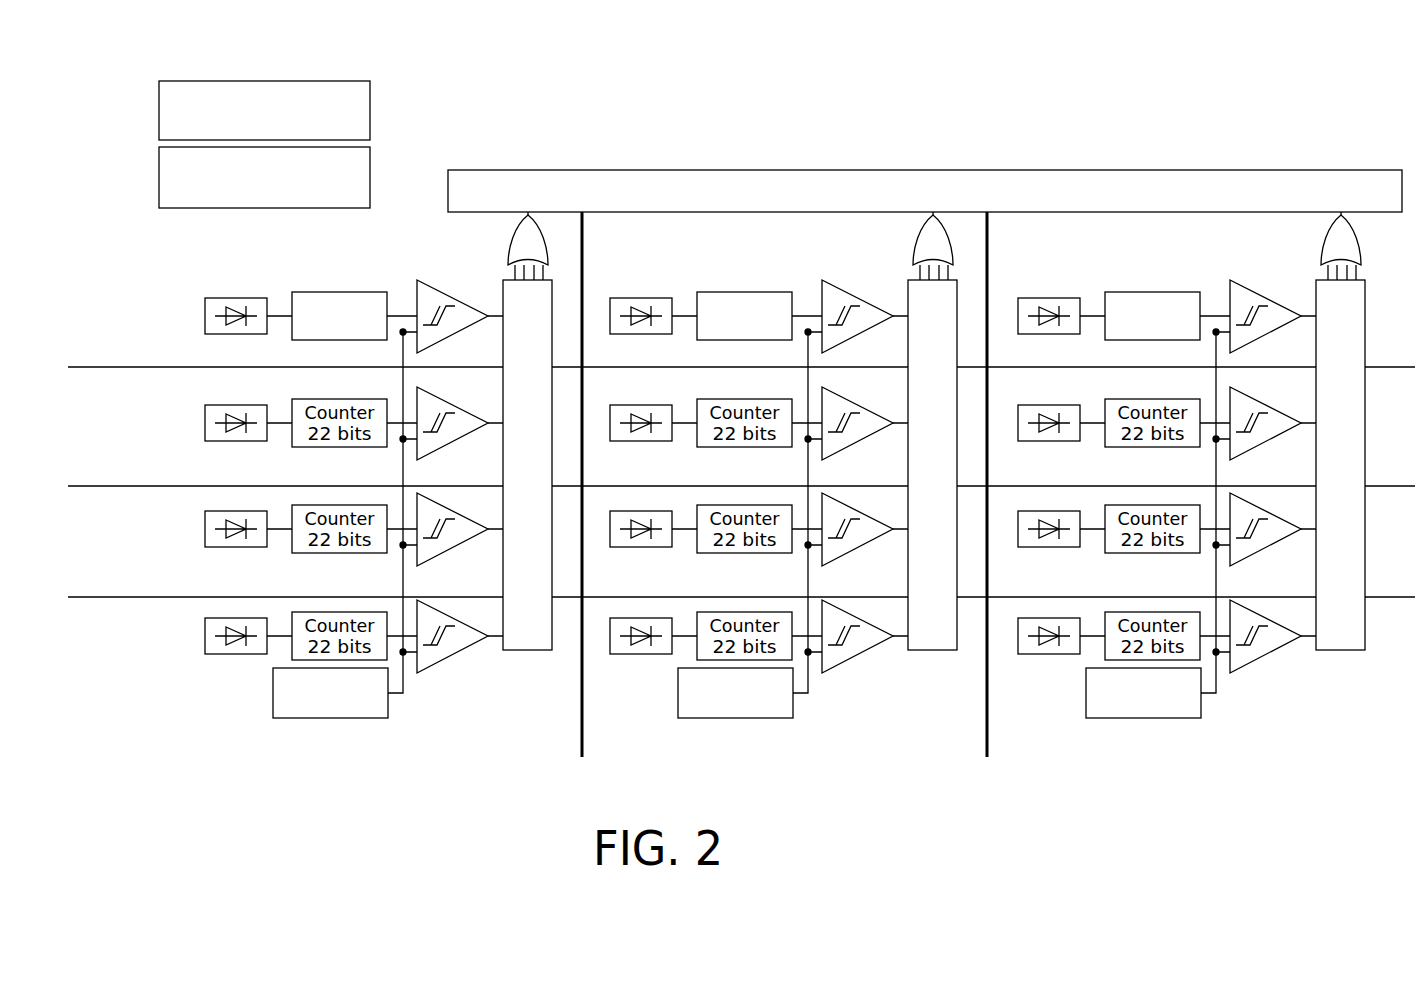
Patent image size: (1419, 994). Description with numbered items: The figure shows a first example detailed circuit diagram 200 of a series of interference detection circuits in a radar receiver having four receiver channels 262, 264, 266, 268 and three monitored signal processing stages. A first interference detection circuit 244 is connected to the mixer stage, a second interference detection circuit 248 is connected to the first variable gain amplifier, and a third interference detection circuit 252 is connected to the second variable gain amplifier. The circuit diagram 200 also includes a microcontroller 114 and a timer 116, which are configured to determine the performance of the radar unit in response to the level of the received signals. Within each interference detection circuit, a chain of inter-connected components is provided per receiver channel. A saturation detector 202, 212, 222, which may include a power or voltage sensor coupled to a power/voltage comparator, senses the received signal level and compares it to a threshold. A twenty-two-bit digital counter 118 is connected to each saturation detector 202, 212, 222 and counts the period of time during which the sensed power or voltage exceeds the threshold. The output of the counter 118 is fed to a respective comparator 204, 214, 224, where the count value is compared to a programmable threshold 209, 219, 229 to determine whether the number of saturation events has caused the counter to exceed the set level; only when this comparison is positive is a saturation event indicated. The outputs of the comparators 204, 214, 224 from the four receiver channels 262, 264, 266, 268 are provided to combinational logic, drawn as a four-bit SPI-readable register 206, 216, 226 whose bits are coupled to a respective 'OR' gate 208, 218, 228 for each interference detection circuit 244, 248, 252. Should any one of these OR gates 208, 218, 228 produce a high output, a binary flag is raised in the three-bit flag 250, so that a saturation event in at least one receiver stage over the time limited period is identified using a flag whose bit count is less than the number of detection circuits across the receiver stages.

The microcontroller 114 is at (200, 81).
The timer 116 is at (158, 194).
The 22-bit digital counter 118 is at (357, 292).
The detailed circuit diagram 200 is at (494, 66).
The saturation detector 202 is at (205, 298).
The comparator 204 is at (445, 293).
The mixer 4-bit SPI readable register 206 is at (503, 292).
The 'OR' gate 208 is at (543, 228).
The programmable threshold 209 is at (273, 707).
The saturation detector 212 is at (638, 272).
The comparator 214 is at (850, 293).
The VGA1 4-bit SPI readable register 216 is at (908, 291).
The 'OR' gate 218 is at (948, 228).
The programmable threshold 219 is at (678, 707).
The saturation detector 222 is at (1043, 272).
The comparator 224 is at (1258, 293).
The VGA2 4-bit SPI readable register 226 is at (1316, 291).
The 'OR' gate 228 is at (1352, 230).
The programmable threshold 229 is at (1086, 707).
The first interference detection circuit 244 is at (345, 773).
The second interference detection circuit 248 is at (752, 773).
The 3-bit flag 250 is at (820, 170).
The third interference detection circuit 252 is at (1248, 773).
The receiver channel 262 is at (127, 326).
The receiver channel 264 is at (127, 445).
The receiver channel 266 is at (127, 565).
The receiver channel 268 is at (127, 683).